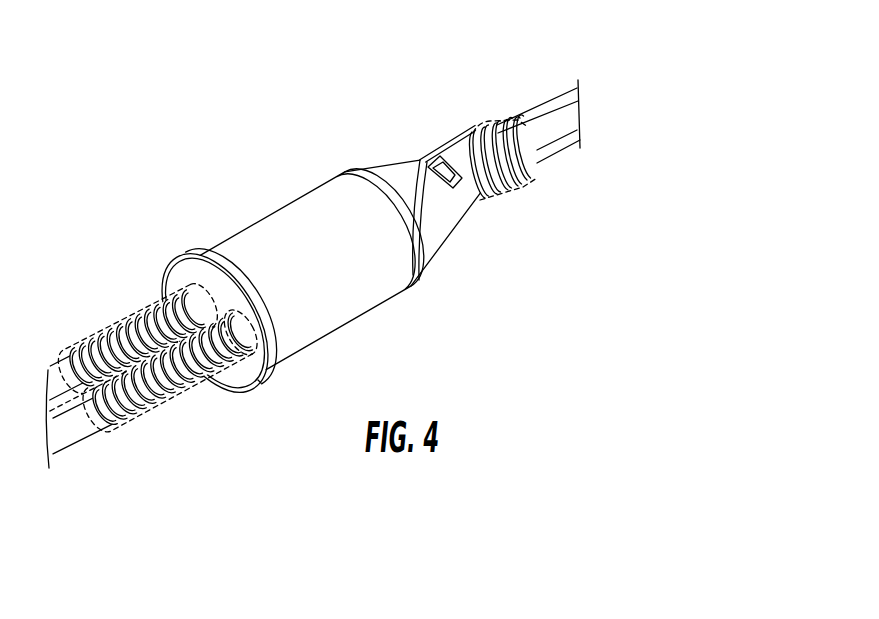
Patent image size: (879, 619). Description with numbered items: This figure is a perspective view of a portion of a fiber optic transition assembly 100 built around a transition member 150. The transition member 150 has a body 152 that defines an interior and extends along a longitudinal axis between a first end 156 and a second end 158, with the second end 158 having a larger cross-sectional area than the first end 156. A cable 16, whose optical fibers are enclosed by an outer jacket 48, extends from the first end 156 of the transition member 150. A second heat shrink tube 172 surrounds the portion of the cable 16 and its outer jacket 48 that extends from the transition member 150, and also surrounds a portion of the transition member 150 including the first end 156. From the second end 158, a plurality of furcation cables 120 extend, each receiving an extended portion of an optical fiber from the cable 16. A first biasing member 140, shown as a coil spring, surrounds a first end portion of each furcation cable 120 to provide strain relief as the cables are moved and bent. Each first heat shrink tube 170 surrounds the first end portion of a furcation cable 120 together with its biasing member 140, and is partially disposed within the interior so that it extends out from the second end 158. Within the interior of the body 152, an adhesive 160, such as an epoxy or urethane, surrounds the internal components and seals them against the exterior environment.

The cable 16 is at (539, 104).
The outer jacket 48 is at (580, 150).
The transition assembly 100 is at (295, 148).
The furcation cable 120 is at (58, 353).
The first biasing member 140 is at (112, 312).
The transition member 150 is at (352, 166).
The body 152 is at (348, 302).
The first end 156 is at (536, 176).
The second end 158 is at (261, 382).
The adhesive 160 is at (166, 283).
The first heat shrink tube 170 is at (90, 337).
The second heat shrink tube 172 is at (478, 113).